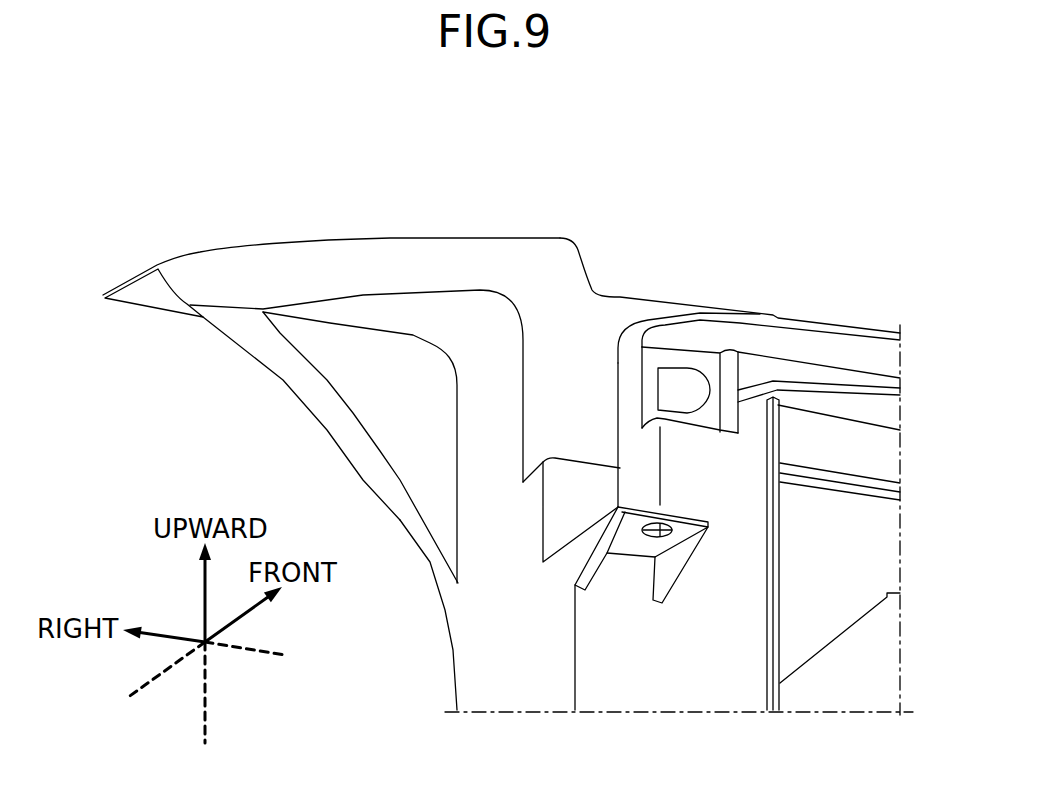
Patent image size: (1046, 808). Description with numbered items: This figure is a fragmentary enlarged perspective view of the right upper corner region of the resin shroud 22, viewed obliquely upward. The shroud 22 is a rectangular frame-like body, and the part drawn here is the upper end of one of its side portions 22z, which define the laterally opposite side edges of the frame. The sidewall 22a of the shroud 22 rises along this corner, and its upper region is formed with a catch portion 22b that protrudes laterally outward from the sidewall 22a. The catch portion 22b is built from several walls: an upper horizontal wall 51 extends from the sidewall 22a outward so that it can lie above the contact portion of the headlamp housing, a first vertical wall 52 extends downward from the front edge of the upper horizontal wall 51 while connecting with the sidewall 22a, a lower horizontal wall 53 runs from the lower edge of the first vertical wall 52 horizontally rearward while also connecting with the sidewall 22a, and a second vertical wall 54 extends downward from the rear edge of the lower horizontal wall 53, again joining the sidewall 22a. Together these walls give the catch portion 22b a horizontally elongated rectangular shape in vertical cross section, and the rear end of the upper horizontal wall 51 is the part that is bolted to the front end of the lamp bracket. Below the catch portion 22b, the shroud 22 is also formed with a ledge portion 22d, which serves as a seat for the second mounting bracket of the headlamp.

The shroud 22 is at (739, 286).
The sidewall 22a is at (500, 428).
The catch portion 22b is at (210, 230).
The ledge portion 22d is at (675, 512).
The side portion 22z is at (483, 647).
The upper horizontal wall 51 is at (152, 295).
The first vertical wall 52 is at (407, 262).
The lower horizontal wall 53 is at (368, 312).
The second vertical wall 54 is at (387, 402).